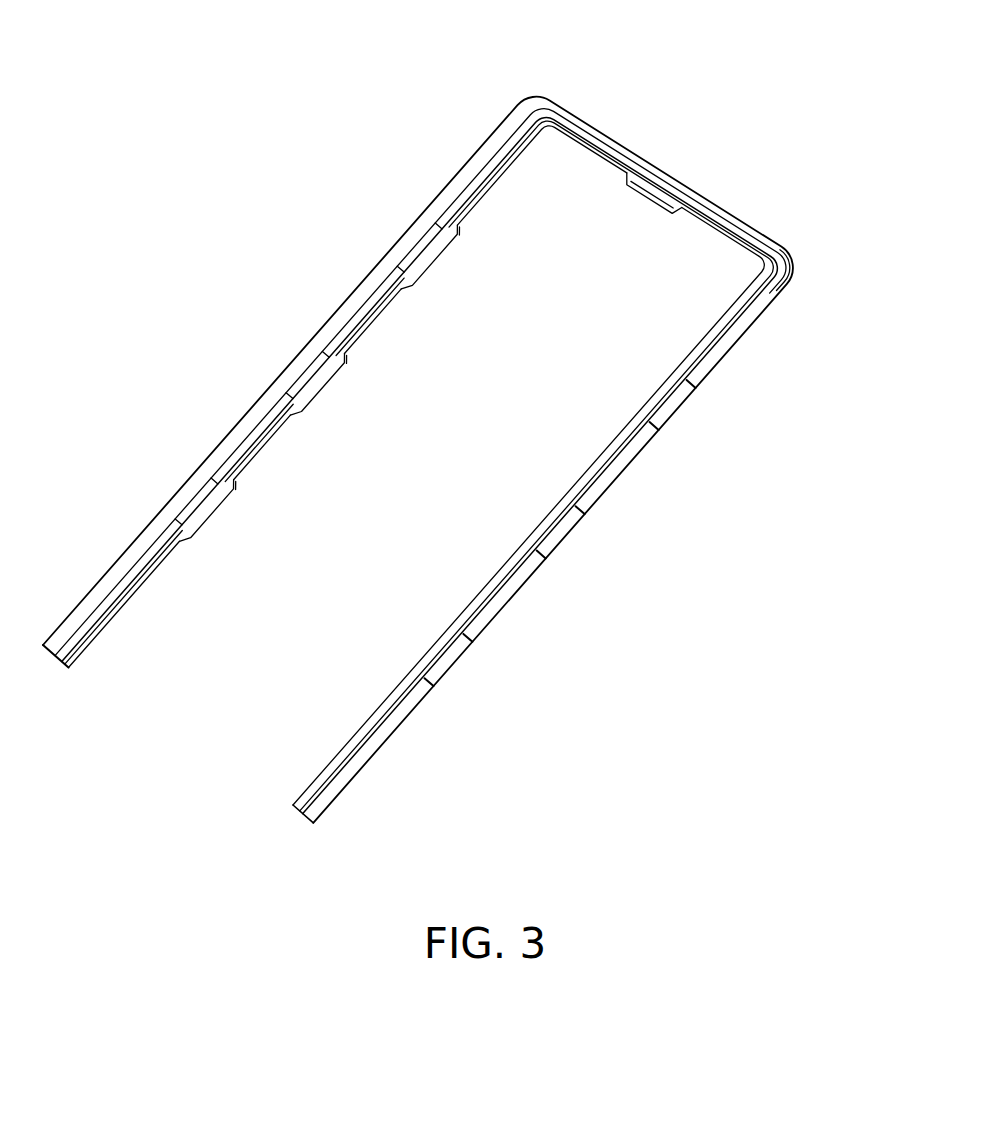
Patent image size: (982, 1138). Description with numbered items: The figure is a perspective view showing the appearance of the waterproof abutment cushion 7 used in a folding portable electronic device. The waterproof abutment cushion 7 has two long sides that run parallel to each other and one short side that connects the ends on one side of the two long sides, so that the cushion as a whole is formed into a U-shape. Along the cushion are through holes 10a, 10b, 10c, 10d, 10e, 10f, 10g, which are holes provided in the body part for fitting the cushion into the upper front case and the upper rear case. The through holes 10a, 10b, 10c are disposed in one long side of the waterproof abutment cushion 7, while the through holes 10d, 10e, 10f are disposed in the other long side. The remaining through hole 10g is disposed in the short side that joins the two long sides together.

The waterproof abutment cushion 7 is at (636, 153).
The through hole 10a is at (193, 508).
The through hole 10b is at (308, 375).
The through hole 10c is at (417, 252).
The through hole 10d is at (653, 188).
The through hole 10e is at (672, 400).
The through hole 10f is at (560, 533).
The through hole 10g is at (448, 655).